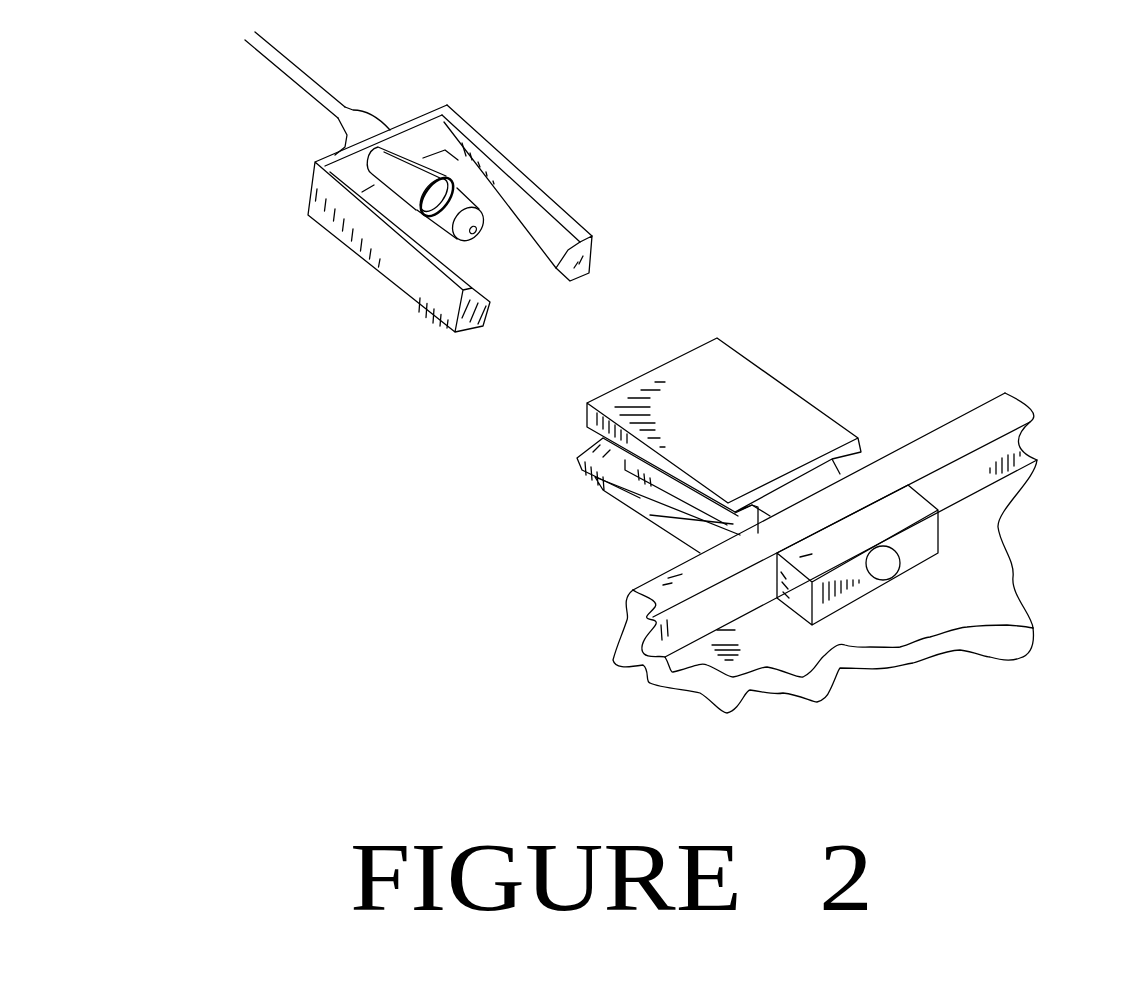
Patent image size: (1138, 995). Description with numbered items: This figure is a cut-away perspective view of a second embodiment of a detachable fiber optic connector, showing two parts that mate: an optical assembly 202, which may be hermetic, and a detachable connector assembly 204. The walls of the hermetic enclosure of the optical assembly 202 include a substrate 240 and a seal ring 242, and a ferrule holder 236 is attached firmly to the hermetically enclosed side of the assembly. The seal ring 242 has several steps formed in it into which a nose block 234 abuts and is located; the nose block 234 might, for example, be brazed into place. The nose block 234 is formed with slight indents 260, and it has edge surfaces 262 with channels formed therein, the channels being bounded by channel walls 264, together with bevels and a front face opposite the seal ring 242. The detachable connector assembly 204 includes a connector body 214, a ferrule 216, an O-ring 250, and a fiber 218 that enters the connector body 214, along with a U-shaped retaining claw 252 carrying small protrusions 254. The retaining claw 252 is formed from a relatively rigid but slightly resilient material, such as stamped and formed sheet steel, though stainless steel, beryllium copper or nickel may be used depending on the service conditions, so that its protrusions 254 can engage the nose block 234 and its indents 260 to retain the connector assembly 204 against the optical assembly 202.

The optical assembly 202 is at (896, 263).
The detachable connector assembly 204 is at (306, 283).
The connector body 214 is at (352, 128).
The ferrule 216 is at (450, 200).
The fiber 218 is at (300, 83).
The O-ring 250 is at (445, 178).
The U-shaped retaining claw 252 is at (545, 200).
The small protrusions 254 is at (592, 253).
The nose block 234 is at (738, 375).
The ferrule holder 236 is at (923, 551).
The substrate 240 is at (985, 598).
The seal ring 242 is at (1003, 412).
The slight indents 260 is at (650, 515).
The edge surfaces 262 is at (578, 456).
The channel walls 264 is at (595, 477).